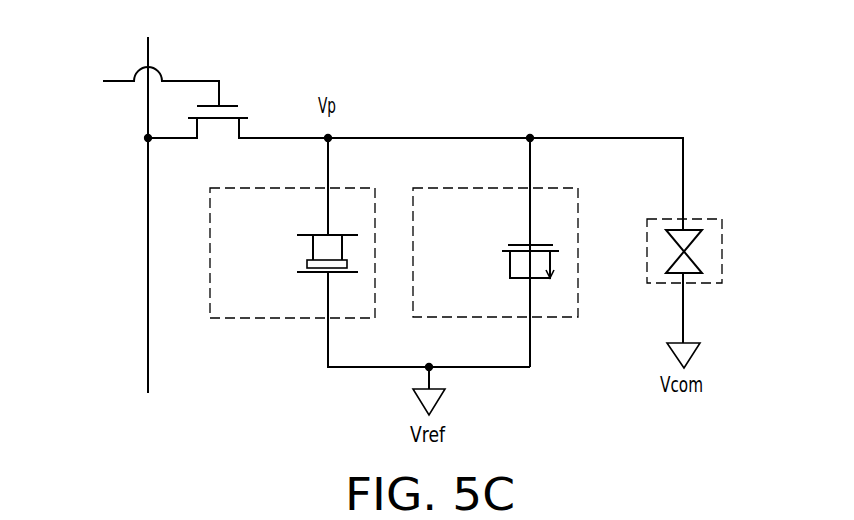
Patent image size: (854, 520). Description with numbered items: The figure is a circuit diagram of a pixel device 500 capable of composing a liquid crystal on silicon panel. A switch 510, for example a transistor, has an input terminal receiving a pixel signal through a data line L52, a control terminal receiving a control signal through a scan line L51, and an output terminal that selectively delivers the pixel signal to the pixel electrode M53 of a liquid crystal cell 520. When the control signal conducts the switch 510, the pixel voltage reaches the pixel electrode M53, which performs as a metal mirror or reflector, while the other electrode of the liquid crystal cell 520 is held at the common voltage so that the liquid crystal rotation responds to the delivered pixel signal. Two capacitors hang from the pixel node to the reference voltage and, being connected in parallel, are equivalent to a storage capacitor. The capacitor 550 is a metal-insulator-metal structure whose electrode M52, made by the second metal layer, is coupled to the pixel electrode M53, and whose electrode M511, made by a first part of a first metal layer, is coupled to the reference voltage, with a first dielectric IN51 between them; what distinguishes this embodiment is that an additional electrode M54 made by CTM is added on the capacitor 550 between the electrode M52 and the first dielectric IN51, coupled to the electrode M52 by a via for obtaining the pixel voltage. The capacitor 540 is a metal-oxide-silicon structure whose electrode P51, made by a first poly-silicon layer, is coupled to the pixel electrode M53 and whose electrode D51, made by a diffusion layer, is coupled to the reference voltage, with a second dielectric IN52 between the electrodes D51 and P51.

The scan line L51 is at (120, 84).
The data line L52 is at (150, 52).
The switch 510 is at (220, 132).
The capacitor 550 is at (278, 320).
The electrode M52 is at (313, 234).
The electrode M54 is at (313, 258).
The first dielectric IN51 is at (307, 264).
The electrode M511 is at (318, 272).
The capacitor 540 is at (480, 320).
The electrode P51 is at (513, 244).
The second dielectric IN52 is at (503, 250).
The electrode D51 is at (528, 256).
The liquid crystal cell 520 is at (722, 260).
The pixel electrode M53 is at (692, 230).
The pixel device 500 is at (808, 422).